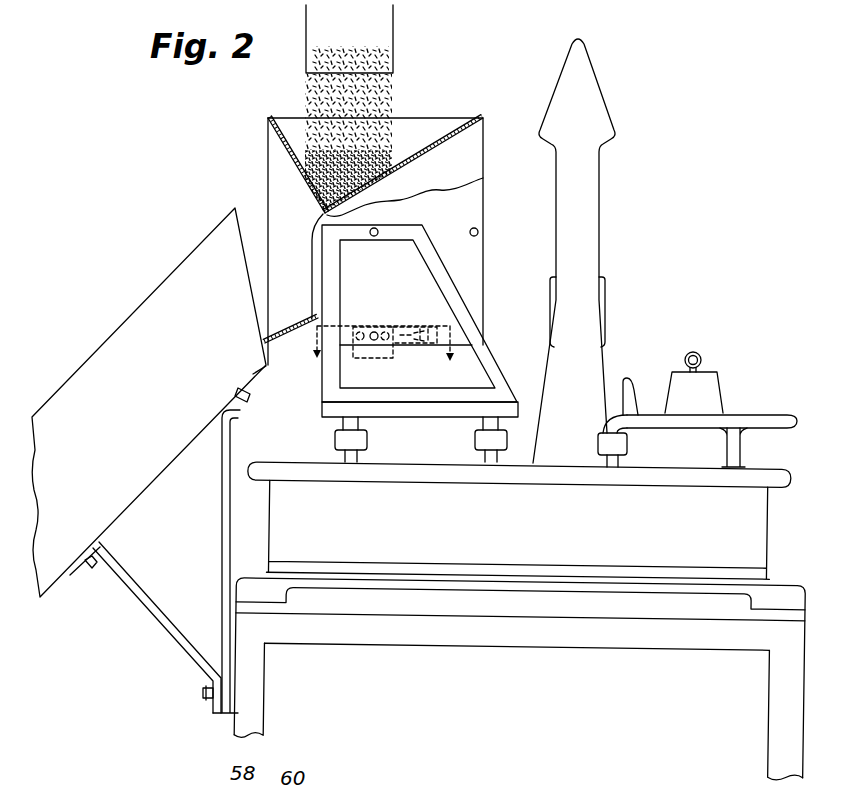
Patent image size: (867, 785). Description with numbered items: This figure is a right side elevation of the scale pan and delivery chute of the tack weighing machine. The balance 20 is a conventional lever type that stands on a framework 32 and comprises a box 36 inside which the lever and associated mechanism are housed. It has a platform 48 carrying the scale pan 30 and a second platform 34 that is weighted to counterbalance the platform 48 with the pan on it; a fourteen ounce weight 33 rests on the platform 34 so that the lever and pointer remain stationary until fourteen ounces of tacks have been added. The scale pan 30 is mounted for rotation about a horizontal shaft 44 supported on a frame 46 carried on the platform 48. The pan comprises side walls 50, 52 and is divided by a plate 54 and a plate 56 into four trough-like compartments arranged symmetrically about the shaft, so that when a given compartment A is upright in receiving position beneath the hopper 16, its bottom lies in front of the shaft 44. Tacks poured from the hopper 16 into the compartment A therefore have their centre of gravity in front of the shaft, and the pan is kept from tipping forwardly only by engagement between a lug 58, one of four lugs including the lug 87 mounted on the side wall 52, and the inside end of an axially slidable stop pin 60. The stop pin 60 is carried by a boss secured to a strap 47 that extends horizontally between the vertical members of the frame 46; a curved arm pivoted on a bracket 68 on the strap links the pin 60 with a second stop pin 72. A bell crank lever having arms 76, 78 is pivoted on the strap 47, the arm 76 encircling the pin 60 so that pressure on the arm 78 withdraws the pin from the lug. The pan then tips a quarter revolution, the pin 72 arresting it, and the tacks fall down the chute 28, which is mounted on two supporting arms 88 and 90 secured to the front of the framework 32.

The hopper 16 is at (388, 32).
The compartment A is at (409, 124).
The scale pan 30 is at (371, 223).
The side wall 50 is at (273, 170).
The plate 54 is at (283, 133).
The plate 56 is at (443, 140).
The side wall 52 is at (477, 198).
The chute 28 is at (197, 258).
The supporting arm 88 is at (134, 588).
The supporting arm 90 is at (227, 505).
The frame 46 is at (411, 312).
The horizontal shaft 44 is at (373, 237).
The lug 87 is at (479, 233).
The bracket 68 is at (368, 356).
The second stop pin 72 is at (360, 330).
The lug 58 is at (374, 331).
The stop pin 60 is at (390, 330).
The arm of bell crank lever 76 is at (408, 340).
The arm of bell crank lever 78 is at (428, 340).
The strap 47 is at (516, 336).
The platform 48 is at (333, 410).
The fourteen ounce weight 33 is at (713, 383).
The platform 34 is at (763, 420).
The balance 20 is at (525, 621).
The box 36 is at (757, 507).
The framework 32 is at (534, 652).